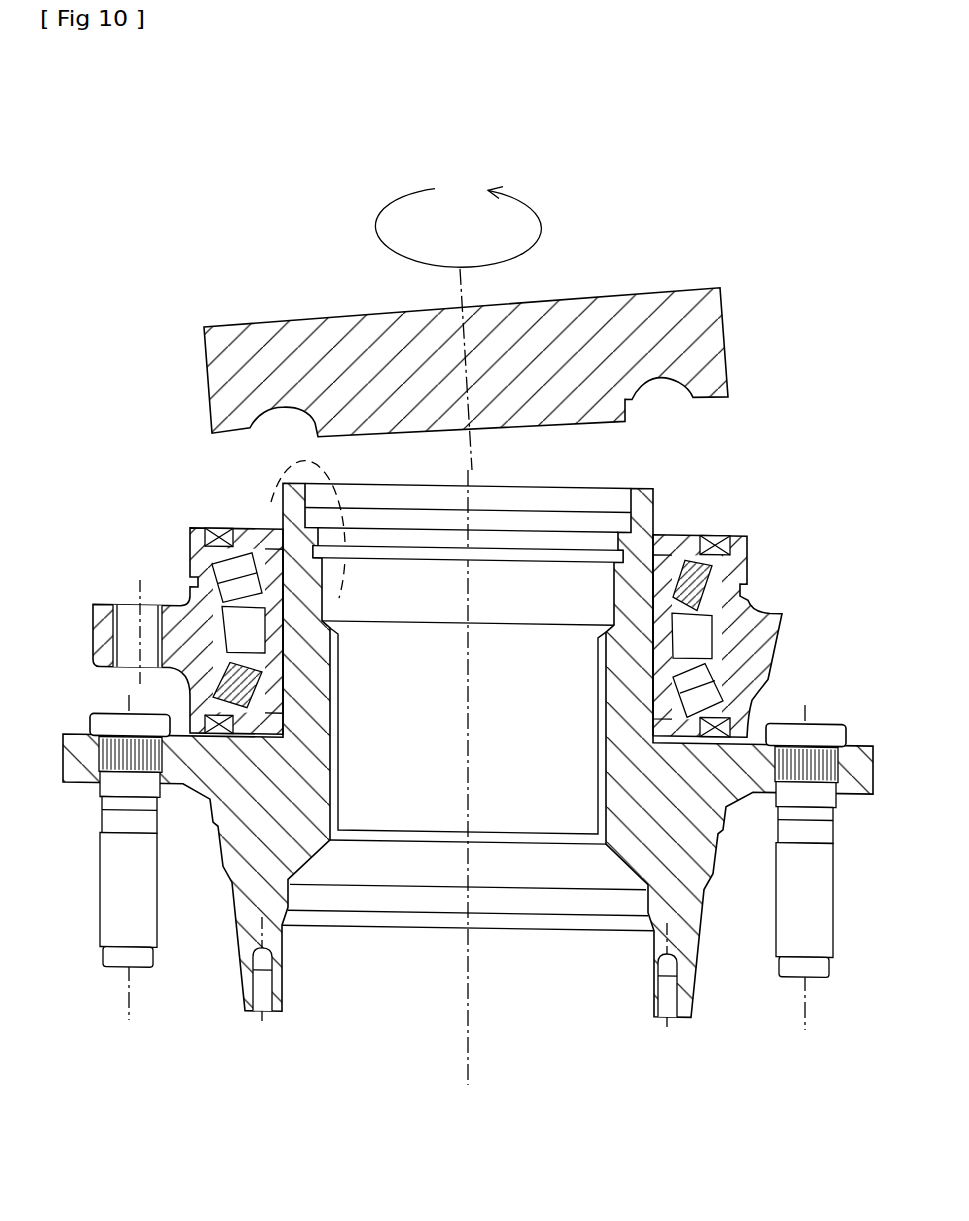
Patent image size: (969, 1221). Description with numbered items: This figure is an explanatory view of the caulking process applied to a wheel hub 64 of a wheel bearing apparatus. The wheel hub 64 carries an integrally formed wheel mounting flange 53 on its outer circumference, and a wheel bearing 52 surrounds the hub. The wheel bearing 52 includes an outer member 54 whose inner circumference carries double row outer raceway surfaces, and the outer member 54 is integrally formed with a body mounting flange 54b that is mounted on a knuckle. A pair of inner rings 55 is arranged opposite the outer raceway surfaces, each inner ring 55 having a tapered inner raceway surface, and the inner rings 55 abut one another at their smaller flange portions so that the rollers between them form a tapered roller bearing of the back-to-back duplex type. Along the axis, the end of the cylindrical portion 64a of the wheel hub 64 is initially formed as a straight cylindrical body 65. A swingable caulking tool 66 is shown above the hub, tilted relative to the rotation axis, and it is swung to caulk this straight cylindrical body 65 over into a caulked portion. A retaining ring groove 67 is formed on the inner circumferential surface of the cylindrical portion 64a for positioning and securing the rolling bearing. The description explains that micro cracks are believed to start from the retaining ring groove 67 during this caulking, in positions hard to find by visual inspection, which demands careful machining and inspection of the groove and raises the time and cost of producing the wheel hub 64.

The wheel bearing 52 is at (823, 491).
The wheel mounting flange 53 is at (183, 771).
The outer member 54 is at (755, 644).
The body mounting flange 54b is at (104, 623).
The inner ring 55 is at (692, 553).
The wheel hub 64 is at (307, 847).
The cylindrical portion 64a is at (285, 683).
The straight cylindrical body 65 is at (643, 514).
The swingable caulking tool 66 is at (705, 331).
The retaining ring groove 67 is at (580, 555).